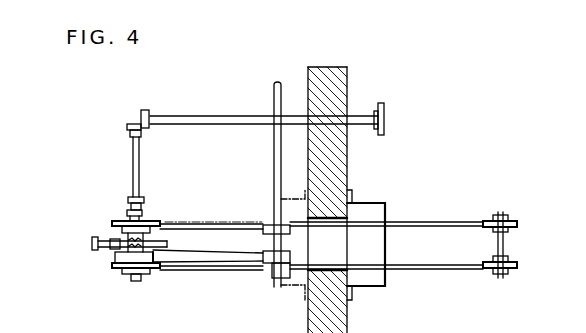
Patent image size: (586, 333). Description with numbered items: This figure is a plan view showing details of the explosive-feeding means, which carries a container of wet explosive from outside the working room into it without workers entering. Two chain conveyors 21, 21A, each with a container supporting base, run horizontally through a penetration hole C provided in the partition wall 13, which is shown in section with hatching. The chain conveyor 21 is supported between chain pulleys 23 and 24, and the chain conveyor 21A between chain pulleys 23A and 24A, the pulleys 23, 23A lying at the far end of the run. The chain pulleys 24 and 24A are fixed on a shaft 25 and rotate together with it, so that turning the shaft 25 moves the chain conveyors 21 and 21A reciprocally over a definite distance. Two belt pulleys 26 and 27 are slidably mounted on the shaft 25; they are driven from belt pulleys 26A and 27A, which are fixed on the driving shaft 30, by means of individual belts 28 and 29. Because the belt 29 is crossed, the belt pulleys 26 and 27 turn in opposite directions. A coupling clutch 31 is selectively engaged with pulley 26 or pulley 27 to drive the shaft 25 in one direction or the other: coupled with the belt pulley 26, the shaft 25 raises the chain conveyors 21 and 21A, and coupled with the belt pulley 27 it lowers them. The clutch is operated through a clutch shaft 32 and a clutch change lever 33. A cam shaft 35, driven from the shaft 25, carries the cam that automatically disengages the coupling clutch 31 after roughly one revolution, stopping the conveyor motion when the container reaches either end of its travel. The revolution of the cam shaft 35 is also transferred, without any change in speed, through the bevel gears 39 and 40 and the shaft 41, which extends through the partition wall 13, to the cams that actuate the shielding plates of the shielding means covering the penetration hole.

The partition wall 13 is at (342, 84).
The penetration hole C is at (333, 252).
The driving shaft 30 is at (278, 97).
The shaft 41 is at (238, 118).
The bevel gear 40 is at (146, 118).
The bevel gear 39 is at (134, 126).
The cam shaft 35 is at (134, 146).
The shaft 25 is at (134, 205).
The chain pulley 24A is at (150, 223).
The belt pulley 26 is at (120, 231).
The belt 28 is at (203, 225).
The belt pulley 26A is at (268, 227).
The clutch change lever 33 is at (92, 242).
The clutch shaft 32 is at (110, 247).
The belt pulley 27 is at (117, 258).
The chain pulley 24 is at (118, 267).
The coupling clutch 31 is at (146, 258).
The belt 29 is at (200, 262).
The belt pulley 27A is at (273, 266).
The chain conveyor 21A is at (400, 222).
The chain conveyor 21 is at (415, 269).
The chain pulley 23A is at (506, 221).
The chain pulley 23 is at (508, 270).